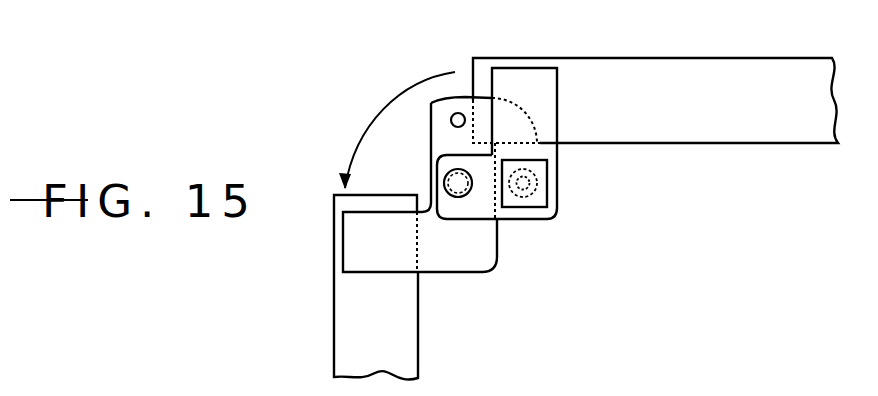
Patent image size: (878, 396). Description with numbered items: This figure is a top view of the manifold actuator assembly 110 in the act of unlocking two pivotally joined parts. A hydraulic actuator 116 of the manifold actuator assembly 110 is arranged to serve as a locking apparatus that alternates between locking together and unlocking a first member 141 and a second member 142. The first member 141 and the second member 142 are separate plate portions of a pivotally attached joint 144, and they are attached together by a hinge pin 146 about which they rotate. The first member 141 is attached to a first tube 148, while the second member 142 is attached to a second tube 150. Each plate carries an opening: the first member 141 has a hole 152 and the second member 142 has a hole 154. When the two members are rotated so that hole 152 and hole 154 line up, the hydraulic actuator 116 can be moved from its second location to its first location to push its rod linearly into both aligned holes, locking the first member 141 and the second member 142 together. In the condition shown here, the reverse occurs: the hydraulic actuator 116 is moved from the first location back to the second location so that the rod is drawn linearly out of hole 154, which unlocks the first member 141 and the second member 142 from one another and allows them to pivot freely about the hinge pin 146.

The manifold actuator assembly 110 is at (567, 180).
The hydraulic actuator 116 is at (524, 198).
The first member 141 is at (447, 272).
The second member 142 is at (557, 100).
The pivotally attached joint 144 is at (466, 192).
The hinge pin 146 is at (466, 170).
The first tube 148 is at (334, 294).
The second tube 150 is at (711, 58).
The hole 152 is at (458, 113).
The hole 154 is at (533, 184).